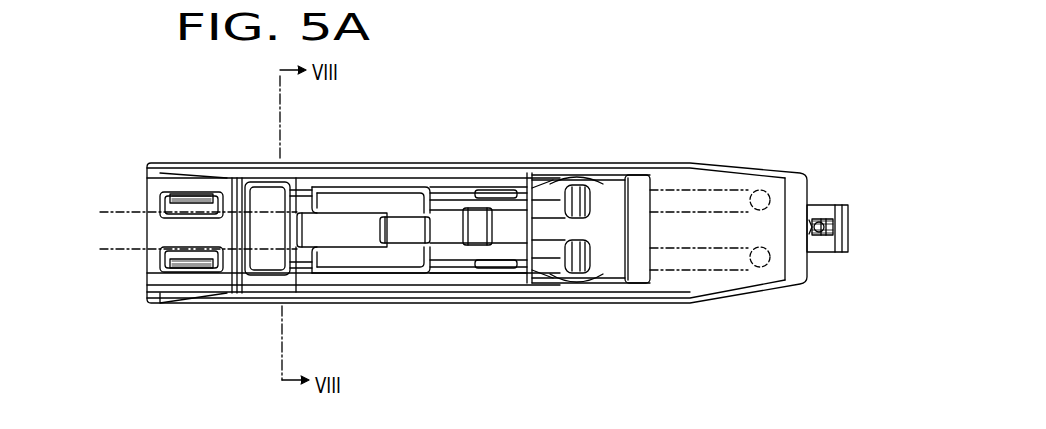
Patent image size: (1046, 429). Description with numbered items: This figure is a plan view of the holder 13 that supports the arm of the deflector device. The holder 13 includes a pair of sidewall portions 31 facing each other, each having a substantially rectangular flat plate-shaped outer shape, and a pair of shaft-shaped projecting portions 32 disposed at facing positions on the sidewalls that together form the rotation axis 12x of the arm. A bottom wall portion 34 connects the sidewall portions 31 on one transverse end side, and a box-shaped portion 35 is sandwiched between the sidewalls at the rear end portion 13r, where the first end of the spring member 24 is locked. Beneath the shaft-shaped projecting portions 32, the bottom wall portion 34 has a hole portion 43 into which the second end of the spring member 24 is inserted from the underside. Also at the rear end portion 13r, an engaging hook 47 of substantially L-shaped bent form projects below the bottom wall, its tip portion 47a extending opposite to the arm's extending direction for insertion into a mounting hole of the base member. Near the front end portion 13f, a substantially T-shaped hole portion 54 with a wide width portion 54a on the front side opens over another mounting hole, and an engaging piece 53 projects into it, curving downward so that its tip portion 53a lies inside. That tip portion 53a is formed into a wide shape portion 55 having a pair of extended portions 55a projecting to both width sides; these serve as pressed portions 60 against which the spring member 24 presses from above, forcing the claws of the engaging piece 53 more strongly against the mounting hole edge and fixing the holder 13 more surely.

The holder 13 is at (495, 181).
The front end portion 13f is at (150, 226).
The rear end portion 13r is at (808, 268).
The spring member 24 is at (342, 226).
The sidewall portions 31 is at (449, 163).
The shaft-shaped projecting portions 32 is at (627, 232).
The rotation axis 12x is at (592, 197).
The bottom wall portion 34 is at (152, 245).
The box-shaped portion 35 is at (750, 183).
The hole portion 43 is at (620, 238).
The engaging hook 47 is at (867, 203).
The tip portion 47a is at (848, 205).
The engaging piece 53 is at (365, 212).
The tip portion 53a is at (147, 209).
The hole portion 54 is at (224, 185).
The wide width portion 54a is at (247, 182).
The wide shape portion 55 is at (196, 233).
The extended portions 55a is at (322, 187).
The pressed portions 60 is at (232, 178).